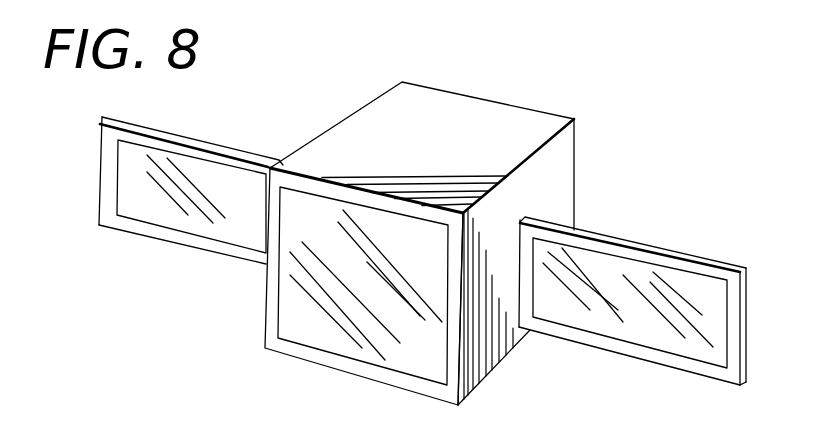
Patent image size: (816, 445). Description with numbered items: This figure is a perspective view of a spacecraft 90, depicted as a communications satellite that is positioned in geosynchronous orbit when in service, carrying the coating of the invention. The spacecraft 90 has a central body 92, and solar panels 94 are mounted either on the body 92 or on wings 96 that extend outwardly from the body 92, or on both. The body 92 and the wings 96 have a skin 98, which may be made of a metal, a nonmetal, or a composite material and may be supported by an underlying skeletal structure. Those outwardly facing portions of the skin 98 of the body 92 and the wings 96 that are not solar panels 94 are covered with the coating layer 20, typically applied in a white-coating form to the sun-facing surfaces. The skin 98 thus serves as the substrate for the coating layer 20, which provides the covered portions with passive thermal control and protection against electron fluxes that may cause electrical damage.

The coating layer 20 is at (313, 355).
The spacecraft 90 is at (343, 96).
The body 92 is at (485, 115).
The solar panels 94 is at (128, 174).
The wings 96 is at (138, 225).
The skin 98 is at (267, 287).